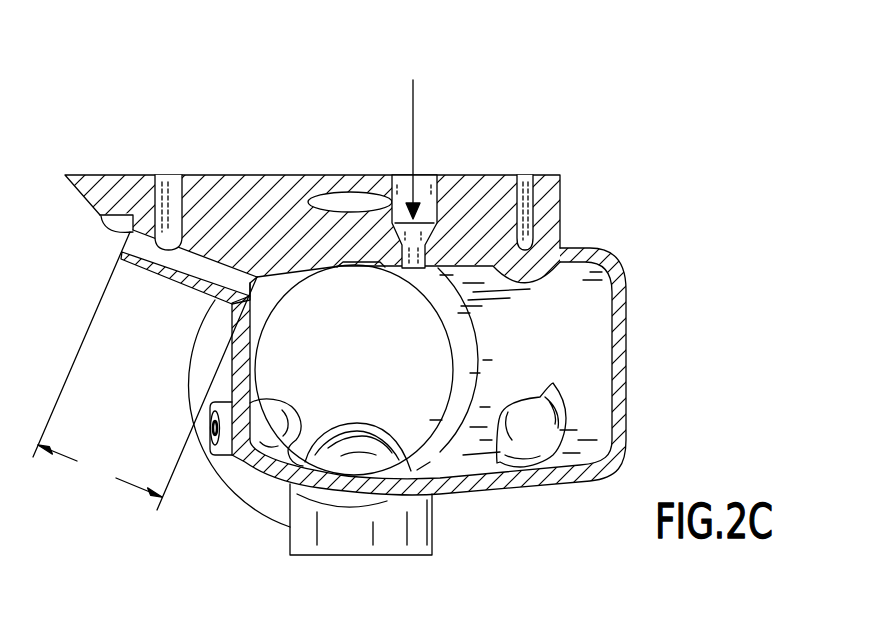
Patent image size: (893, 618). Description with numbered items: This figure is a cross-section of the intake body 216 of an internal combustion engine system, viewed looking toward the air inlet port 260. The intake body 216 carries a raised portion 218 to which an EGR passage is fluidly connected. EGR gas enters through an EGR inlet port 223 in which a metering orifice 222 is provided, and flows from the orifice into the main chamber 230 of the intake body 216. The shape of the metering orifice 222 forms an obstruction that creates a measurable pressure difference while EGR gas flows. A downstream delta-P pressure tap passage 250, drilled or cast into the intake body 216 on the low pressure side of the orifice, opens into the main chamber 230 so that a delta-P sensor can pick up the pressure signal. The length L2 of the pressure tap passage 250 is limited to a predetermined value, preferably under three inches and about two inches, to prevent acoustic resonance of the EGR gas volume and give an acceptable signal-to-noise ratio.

The intake body 216 is at (563, 128).
The raised portion 218 is at (586, 212).
The metering orifice 222 is at (413, 80).
The EGR inlet port 223 is at (391, 175).
The main chamber 230 is at (528, 360).
The downstream delta-P pressure tap passage 250 is at (253, 283).
The air inlet port 260 is at (377, 360).
The length of downstream delta-P pressure tap passage L2 is at (145, 371).